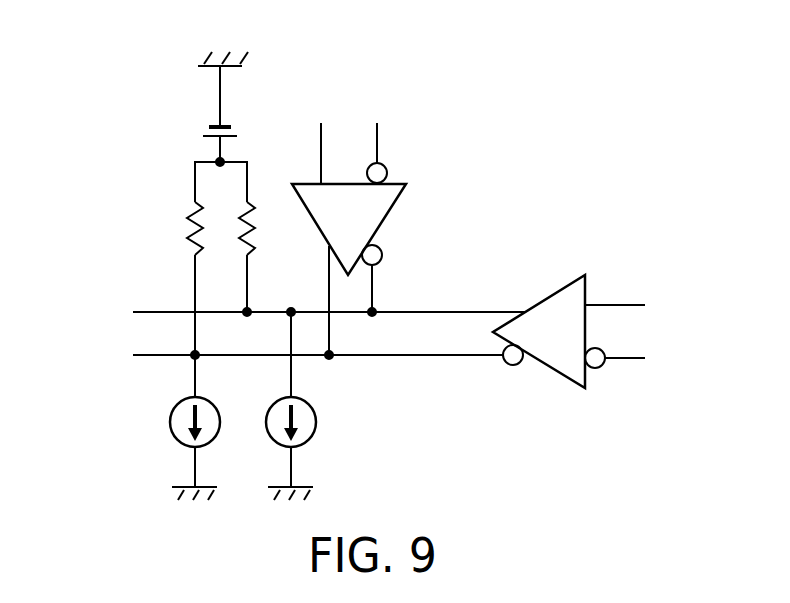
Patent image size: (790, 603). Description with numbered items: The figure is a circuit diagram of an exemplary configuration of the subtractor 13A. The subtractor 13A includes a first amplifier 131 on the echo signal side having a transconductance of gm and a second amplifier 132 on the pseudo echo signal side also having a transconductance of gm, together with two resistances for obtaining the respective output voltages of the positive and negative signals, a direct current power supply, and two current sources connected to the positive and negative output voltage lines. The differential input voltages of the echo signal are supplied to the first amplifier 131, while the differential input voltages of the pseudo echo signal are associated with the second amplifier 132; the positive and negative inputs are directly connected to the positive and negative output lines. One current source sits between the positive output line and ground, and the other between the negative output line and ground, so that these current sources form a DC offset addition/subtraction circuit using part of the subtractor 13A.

The subtractor 13A is at (506, 130).
The first amplifier 131 is at (560, 290).
The second amplifier 132 is at (389, 210).